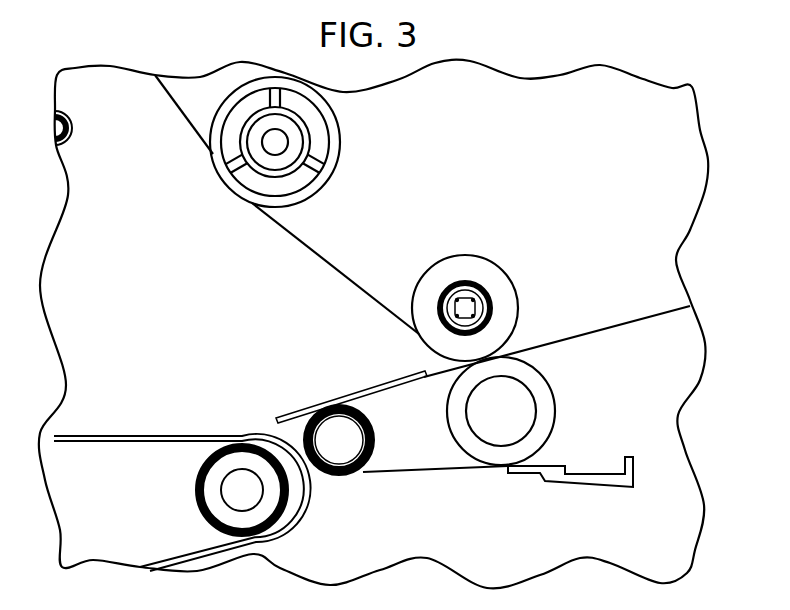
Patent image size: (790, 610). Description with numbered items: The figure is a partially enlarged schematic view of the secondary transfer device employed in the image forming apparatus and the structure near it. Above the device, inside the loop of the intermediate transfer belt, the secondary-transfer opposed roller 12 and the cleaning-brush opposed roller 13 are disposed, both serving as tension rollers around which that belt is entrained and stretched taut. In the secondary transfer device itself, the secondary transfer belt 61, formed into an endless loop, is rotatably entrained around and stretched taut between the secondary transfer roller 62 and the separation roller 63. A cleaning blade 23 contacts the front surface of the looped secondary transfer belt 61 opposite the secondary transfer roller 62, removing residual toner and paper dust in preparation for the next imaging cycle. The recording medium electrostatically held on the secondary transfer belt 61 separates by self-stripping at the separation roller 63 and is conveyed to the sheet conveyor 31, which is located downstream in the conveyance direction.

The cleaning-brush opposed roller 13 is at (339, 143).
The secondary-transfer opposed roller 12 is at (470, 265).
The secondary transfer roller 62 is at (548, 398).
The separation roller 63 is at (363, 468).
The secondary transfer belt 61 is at (444, 473).
The cleaning blade 23 is at (558, 482).
The sheet conveyor 31 is at (145, 428).